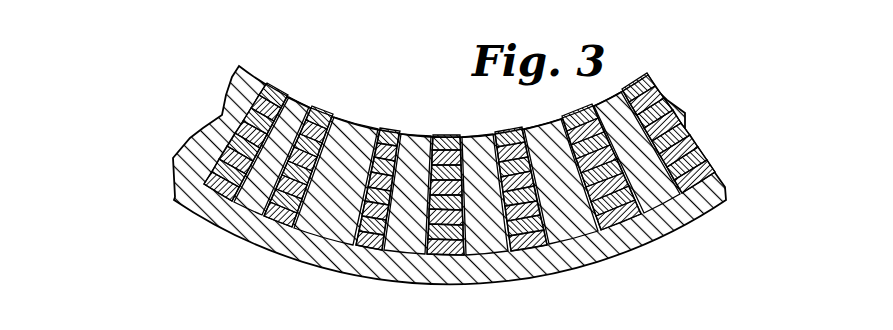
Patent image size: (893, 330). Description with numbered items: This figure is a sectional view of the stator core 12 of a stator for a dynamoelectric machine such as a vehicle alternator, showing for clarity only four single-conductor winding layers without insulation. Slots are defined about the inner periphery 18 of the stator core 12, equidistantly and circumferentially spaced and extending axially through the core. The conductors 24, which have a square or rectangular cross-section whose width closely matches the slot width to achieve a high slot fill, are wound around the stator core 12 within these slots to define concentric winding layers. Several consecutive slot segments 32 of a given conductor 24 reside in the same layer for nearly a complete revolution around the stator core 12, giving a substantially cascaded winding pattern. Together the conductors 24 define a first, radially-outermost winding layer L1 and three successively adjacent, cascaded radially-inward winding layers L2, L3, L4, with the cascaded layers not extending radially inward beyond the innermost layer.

The stator core 12 is at (293, 257).
The inner periphery 18 is at (300, 120).
The slot segments 32 is at (390, 130).
The conductors 24 is at (683, 153).
The first radially-outermost winding layer L1 is at (751, 124).
The cascaded radially-inward winding layer L2 is at (734, 100).
The cascaded radially-inward winding layer L3 is at (716, 75).
The cascaded radially-inward winding layer L4 is at (696, 52).